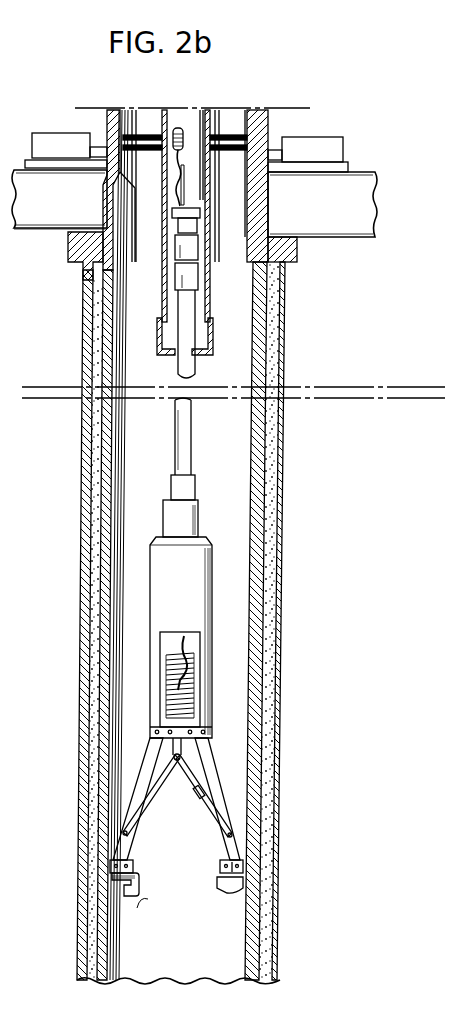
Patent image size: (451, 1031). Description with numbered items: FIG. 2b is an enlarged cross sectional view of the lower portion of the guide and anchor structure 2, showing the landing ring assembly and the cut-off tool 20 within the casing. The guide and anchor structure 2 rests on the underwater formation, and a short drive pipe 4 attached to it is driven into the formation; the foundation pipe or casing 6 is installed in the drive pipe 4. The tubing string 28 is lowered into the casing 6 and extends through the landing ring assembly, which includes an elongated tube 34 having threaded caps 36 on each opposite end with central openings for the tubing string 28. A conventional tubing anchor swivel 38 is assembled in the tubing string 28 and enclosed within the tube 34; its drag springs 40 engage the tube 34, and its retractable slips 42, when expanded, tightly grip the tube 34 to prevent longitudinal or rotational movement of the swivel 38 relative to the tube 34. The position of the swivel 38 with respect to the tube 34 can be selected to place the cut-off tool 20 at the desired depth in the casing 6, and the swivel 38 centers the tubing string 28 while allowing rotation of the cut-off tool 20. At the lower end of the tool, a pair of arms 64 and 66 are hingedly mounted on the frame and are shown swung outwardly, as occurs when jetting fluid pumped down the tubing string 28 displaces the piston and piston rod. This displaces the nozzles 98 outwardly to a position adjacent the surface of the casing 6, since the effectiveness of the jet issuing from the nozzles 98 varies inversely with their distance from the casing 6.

The guide and anchor structure 2 is at (309, 142).
The drive pipe 4 is at (286, 375).
The foundation pipe or casing 6 is at (118, 478).
The cut-off tool 20 is at (217, 546).
The tubing string 28 is at (183, 464).
The elongated tube 34 is at (212, 238).
The threaded caps 36 is at (160, 352).
The tubing anchor swivel 38 is at (206, 130).
The drag springs 40 is at (172, 195).
The retractable slips 42 is at (179, 127).
The arm 64 is at (222, 832).
The arm 66 is at (140, 808).
The nozzles 98 is at (122, 914).